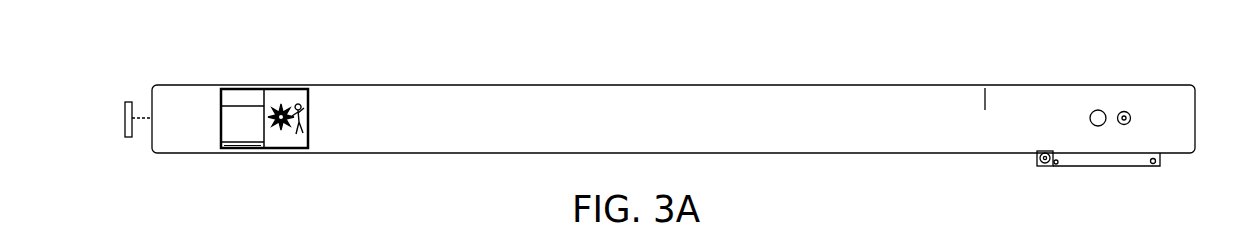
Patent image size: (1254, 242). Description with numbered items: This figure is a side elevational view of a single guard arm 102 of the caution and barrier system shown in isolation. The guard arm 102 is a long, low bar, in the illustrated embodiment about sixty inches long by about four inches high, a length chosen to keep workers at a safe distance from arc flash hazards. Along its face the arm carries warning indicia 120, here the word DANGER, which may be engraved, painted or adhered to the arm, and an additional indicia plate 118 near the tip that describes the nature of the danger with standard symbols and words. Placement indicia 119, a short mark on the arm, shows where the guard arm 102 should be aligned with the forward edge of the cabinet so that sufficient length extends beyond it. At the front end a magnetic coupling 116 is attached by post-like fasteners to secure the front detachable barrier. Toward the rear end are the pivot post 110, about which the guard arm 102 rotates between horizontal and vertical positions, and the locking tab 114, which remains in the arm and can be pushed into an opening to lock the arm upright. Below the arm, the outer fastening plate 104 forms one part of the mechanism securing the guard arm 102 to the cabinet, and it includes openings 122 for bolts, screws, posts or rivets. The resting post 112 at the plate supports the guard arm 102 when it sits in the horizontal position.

The guard arm 102 is at (767, 84).
The outer fastening plate 104 is at (1102, 162).
The pivot post 110 is at (1123, 110).
The resting post 112 is at (1037, 158).
The locking tab 114 is at (1097, 110).
The magnetic coupling 116 is at (127, 100).
The indicia plate 118 is at (273, 87).
The placement indicia 119 is at (985, 88).
The warning indicia 120 is at (645, 86).
The openings 122 is at (1056, 165).